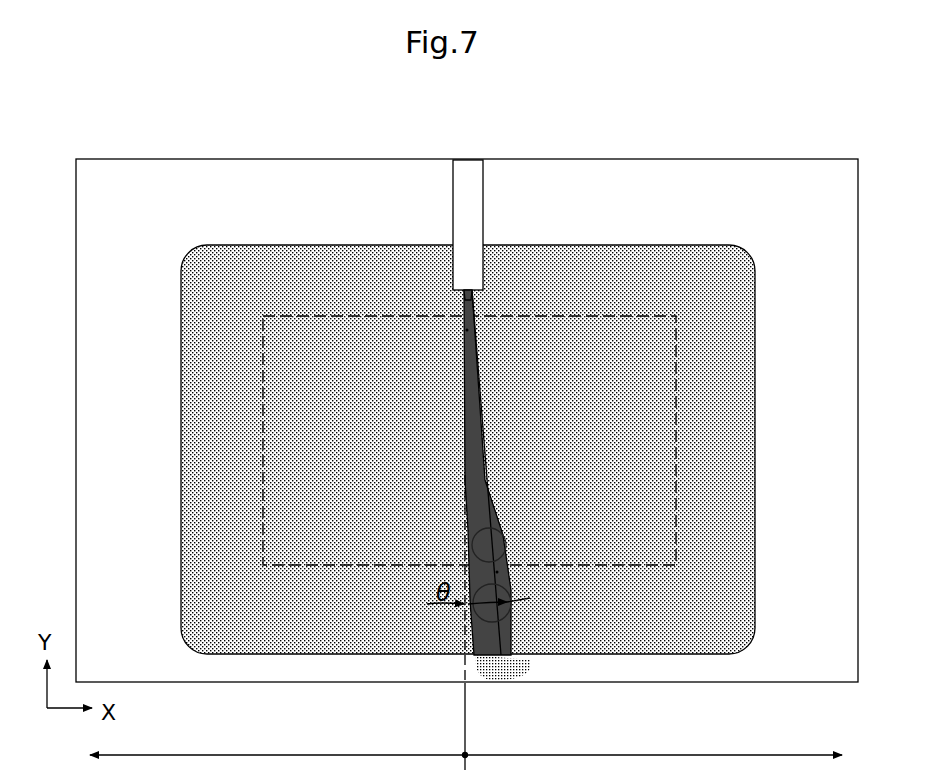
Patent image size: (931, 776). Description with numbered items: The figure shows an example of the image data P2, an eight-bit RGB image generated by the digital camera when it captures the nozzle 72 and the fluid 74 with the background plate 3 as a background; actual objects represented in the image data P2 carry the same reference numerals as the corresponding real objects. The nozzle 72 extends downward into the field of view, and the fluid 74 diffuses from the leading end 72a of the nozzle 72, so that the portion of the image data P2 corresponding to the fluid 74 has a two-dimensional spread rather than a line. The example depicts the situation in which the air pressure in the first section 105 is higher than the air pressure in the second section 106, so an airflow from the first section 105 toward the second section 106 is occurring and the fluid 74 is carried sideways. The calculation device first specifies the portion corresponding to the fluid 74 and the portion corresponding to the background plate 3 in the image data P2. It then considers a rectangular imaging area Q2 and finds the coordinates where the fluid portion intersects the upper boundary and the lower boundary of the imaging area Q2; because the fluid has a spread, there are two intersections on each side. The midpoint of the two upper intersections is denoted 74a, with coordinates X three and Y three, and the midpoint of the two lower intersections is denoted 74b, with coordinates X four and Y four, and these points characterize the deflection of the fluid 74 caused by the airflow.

The background plate 3 is at (195, 282).
The nozzle 72 is at (453, 207).
The leading end of the nozzle 72a is at (478, 296).
The fluid 74 is at (470, 513).
The midpoint of the upper intersections (X3, Y3) 74a is at (466, 330).
The midpoint of the lower intersections (X4, Y4) 74b is at (497, 572).
The image data P2 is at (774, 160).
The imaging area Q2 is at (676, 380).
The first section 105 is at (277, 742).
The second section 106 is at (653, 743).